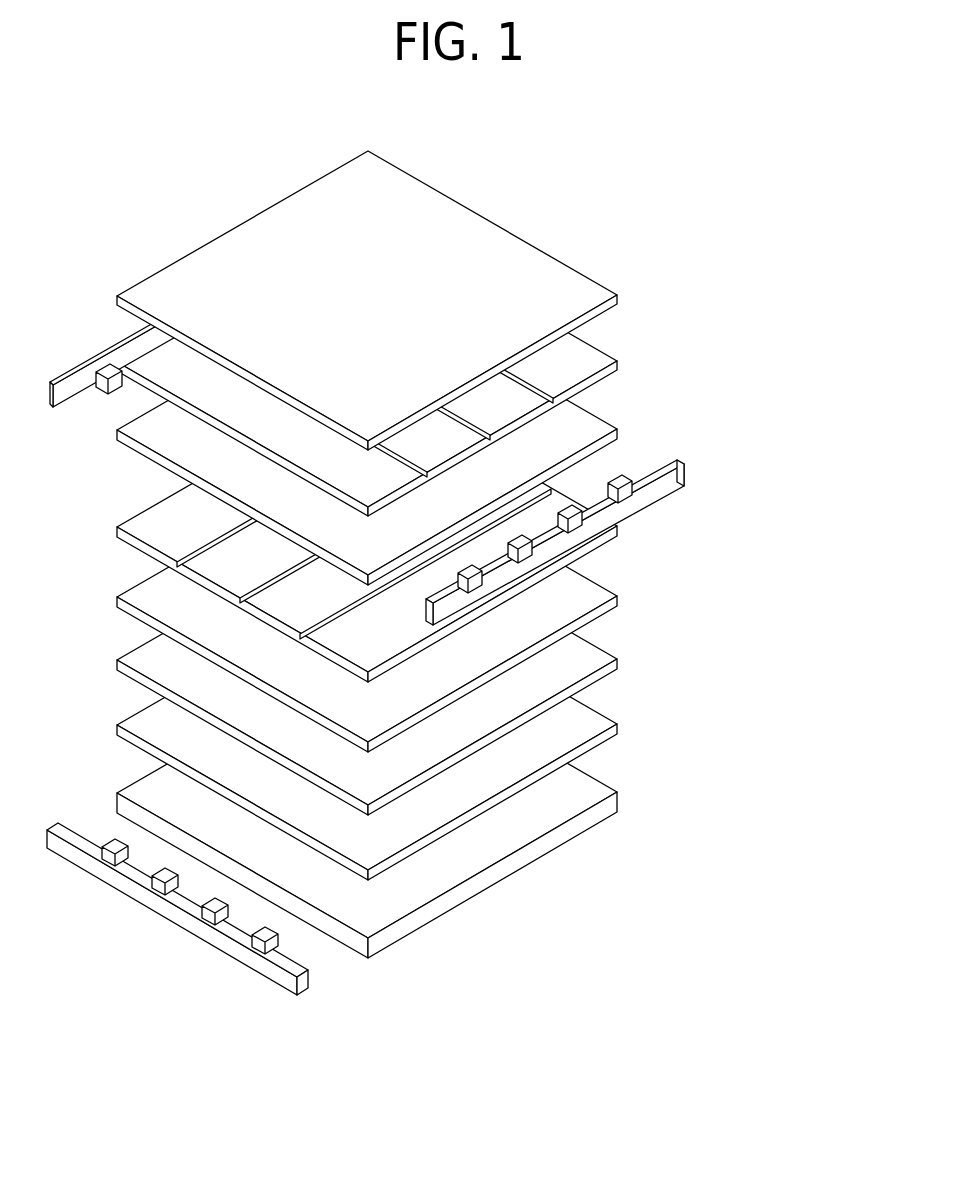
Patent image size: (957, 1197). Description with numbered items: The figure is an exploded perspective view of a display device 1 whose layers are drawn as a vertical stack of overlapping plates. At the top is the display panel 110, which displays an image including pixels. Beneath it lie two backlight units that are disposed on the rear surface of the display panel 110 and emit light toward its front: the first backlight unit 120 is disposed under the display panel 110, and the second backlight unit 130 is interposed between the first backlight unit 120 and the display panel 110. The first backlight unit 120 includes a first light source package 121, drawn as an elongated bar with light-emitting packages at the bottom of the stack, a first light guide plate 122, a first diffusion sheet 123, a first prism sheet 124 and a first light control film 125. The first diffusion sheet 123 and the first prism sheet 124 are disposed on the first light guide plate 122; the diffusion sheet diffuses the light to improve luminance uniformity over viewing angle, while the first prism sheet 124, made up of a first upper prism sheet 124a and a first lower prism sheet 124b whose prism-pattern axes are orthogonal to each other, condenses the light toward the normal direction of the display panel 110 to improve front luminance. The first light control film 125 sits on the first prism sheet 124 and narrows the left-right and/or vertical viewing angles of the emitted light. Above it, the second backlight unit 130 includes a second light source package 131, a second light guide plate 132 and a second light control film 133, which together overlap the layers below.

The display device 1 is at (648, 203).
The display panel 110 is at (620, 294).
The first backlight unit 120 is at (462, 694).
The first light source package 121 is at (309, 979).
The first light guide plate 122 is at (619, 806).
The first diffusion sheet 123 is at (603, 747).
The first prism sheet 124 is at (468, 633).
The first upper prism sheet 124a is at (619, 601).
The first lower prism sheet 124b is at (619, 665).
The first light control film 125 is at (435, 532).
The second backlight unit 130 is at (429, 421).
The second light source package 131 is at (686, 478).
The second light guide plate 132 is at (618, 432).
The second light control film 133 is at (618, 370).